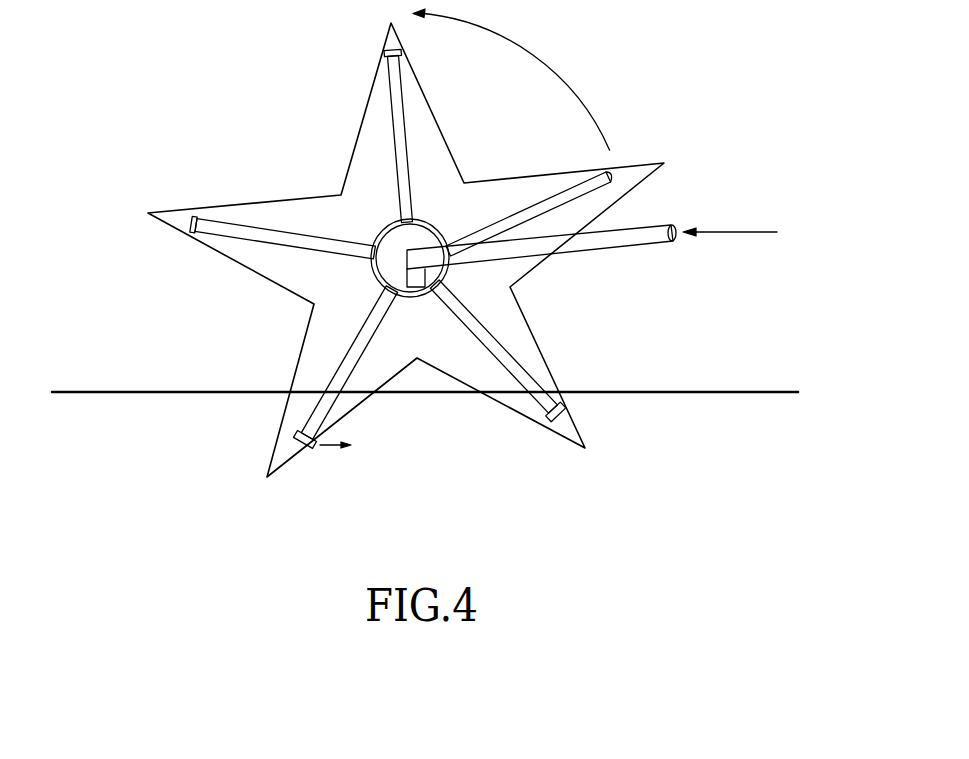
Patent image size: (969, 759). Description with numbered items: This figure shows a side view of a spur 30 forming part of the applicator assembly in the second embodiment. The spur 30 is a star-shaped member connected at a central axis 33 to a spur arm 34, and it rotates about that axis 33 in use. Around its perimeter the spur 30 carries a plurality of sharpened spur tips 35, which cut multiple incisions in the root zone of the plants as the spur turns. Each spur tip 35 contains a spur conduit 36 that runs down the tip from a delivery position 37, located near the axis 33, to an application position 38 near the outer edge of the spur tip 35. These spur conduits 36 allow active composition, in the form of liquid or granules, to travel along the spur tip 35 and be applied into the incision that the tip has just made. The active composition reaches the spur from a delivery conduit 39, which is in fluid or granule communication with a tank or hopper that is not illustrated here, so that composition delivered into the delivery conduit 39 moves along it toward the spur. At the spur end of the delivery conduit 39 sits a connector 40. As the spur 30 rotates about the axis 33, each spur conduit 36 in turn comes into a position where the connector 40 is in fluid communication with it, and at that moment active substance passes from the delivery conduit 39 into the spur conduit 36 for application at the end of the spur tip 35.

The spur 30 is at (597, 88).
The axis 33 is at (392, 242).
The spur arm 34 is at (632, 234).
The spur tip 35 is at (425, 128).
The spur conduit 36 is at (230, 226).
The delivery position 37 is at (440, 203).
The application position 38 is at (380, 59).
The delivery conduit 39 is at (675, 238).
The connector 40 is at (407, 277).